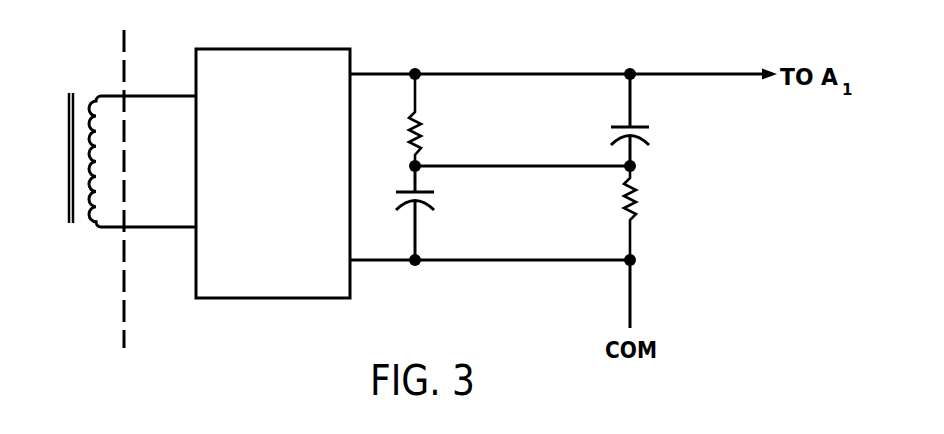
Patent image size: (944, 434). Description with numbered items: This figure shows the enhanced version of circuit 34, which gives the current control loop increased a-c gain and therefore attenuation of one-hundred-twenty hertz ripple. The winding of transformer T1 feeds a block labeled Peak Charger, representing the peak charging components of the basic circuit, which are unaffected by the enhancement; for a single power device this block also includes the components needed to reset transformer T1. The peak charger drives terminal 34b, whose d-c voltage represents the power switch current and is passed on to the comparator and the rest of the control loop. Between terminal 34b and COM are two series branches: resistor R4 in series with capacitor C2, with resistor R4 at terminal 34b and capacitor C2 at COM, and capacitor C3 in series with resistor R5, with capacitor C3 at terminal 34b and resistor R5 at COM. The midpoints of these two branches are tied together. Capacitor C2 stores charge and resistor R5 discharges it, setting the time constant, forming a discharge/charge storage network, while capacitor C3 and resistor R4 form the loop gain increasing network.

The circuit 34 is at (350, 28).
The terminal 34b is at (411, 59).
The transformer T1 is at (126, 145).
The resistor R4 is at (436, 120).
The capacitor C2 is at (434, 213).
The capacitor C3 is at (650, 120).
The resistor R5 is at (654, 213).